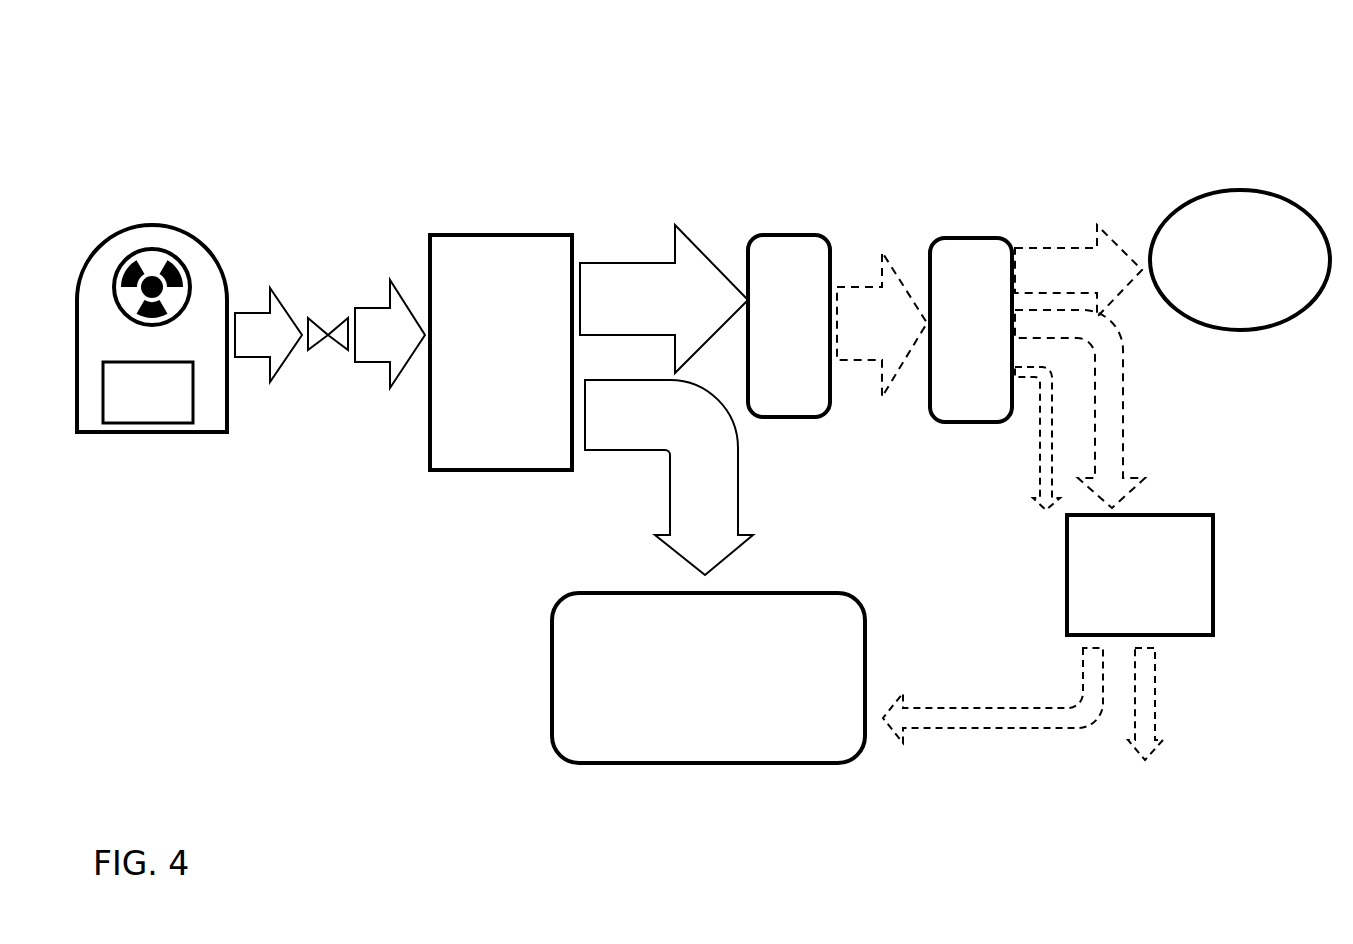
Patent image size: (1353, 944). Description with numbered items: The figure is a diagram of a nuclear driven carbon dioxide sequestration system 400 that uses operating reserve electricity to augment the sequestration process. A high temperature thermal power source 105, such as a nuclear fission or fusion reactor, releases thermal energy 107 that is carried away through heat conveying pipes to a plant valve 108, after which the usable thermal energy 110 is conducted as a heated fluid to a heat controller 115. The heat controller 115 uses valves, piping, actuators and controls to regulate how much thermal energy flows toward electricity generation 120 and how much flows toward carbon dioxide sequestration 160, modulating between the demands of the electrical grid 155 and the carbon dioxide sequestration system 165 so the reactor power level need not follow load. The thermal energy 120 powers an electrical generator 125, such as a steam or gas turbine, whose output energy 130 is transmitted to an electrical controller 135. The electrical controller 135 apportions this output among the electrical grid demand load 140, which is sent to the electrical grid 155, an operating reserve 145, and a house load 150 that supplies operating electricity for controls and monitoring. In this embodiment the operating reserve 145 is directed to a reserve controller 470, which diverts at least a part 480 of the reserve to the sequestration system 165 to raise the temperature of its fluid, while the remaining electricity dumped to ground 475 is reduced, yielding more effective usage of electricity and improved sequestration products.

The carbon dioxide sequestration system 400 is at (1070, 79).
The high temperature thermal power source 105 is at (177, 228).
The thermal energy 107 is at (268, 290).
The plant valve 108 is at (337, 347).
The usable thermal energy 110 is at (390, 281).
The heat controller 115 is at (512, 235).
The electricity generation thermal energy flow 120 is at (680, 229).
The electrical generator 125 is at (815, 237).
The electrical generator output energy 130 is at (885, 255).
The electrical controller 135 is at (958, 237).
The electrical grid demand load 140 is at (1108, 237).
The electrical grid 155 is at (1227, 340).
The operating reserve 145 is at (1123, 430).
The house load 150 is at (1042, 410).
The carbon dioxide sequestration thermal energy flow 160 is at (670, 482).
The carbon dioxide sequestration system 165 is at (778, 592).
The reserve controller 470 is at (1215, 578).
The electricity dumped to ground 475 is at (1163, 725).
The diverted part of operating reserve 480 is at (1055, 708).